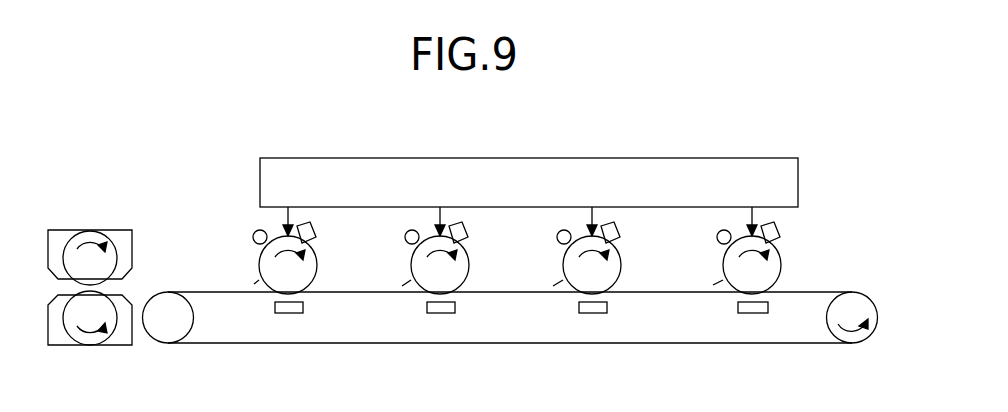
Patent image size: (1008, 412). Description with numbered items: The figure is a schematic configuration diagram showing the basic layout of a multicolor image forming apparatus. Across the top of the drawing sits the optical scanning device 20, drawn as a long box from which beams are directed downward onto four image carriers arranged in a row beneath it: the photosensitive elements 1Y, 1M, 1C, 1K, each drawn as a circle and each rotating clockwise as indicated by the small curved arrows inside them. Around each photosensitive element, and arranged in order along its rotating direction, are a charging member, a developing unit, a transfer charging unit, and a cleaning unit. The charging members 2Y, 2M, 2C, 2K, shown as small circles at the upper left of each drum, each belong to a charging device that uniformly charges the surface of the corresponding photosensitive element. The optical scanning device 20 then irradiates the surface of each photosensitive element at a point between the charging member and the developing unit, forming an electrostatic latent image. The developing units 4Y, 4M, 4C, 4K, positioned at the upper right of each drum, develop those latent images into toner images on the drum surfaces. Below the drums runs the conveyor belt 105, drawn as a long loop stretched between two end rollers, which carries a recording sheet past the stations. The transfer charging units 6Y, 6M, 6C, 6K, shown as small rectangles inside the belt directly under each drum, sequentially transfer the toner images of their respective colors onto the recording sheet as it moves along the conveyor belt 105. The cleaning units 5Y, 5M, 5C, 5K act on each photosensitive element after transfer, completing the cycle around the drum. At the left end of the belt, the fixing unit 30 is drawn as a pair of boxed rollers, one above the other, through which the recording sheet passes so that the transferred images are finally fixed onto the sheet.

The optical scanning device 20 is at (654, 158).
The fixing unit 30 is at (102, 259).
The conveyor belt 105 is at (522, 343).
The photosensitive element 1K is at (288, 265).
The photosensitive element 1C is at (440, 265).
The photosensitive element 1M is at (592, 265).
The photosensitive element 1Y is at (752, 265).
The charging member 2K is at (254, 232).
The charging member 2C is at (406, 232).
The charging member 2M is at (558, 232).
The charging member 2Y is at (719, 231).
The developing unit 4K is at (316, 233).
The developing unit 4C is at (468, 233).
The developing unit 4M is at (620, 233).
The developing unit 4Y is at (780, 233).
The cleaning unit 5K is at (239, 271).
The cleaning unit 5C is at (386, 276).
The cleaning unit 5M is at (534, 279).
The cleaning unit 5Y is at (694, 274).
The transfer charging unit 6K is at (303, 307).
The transfer charging unit 6C is at (455, 306).
The transfer charging unit 6M is at (607, 306).
The transfer charging unit 6Y is at (768, 306).